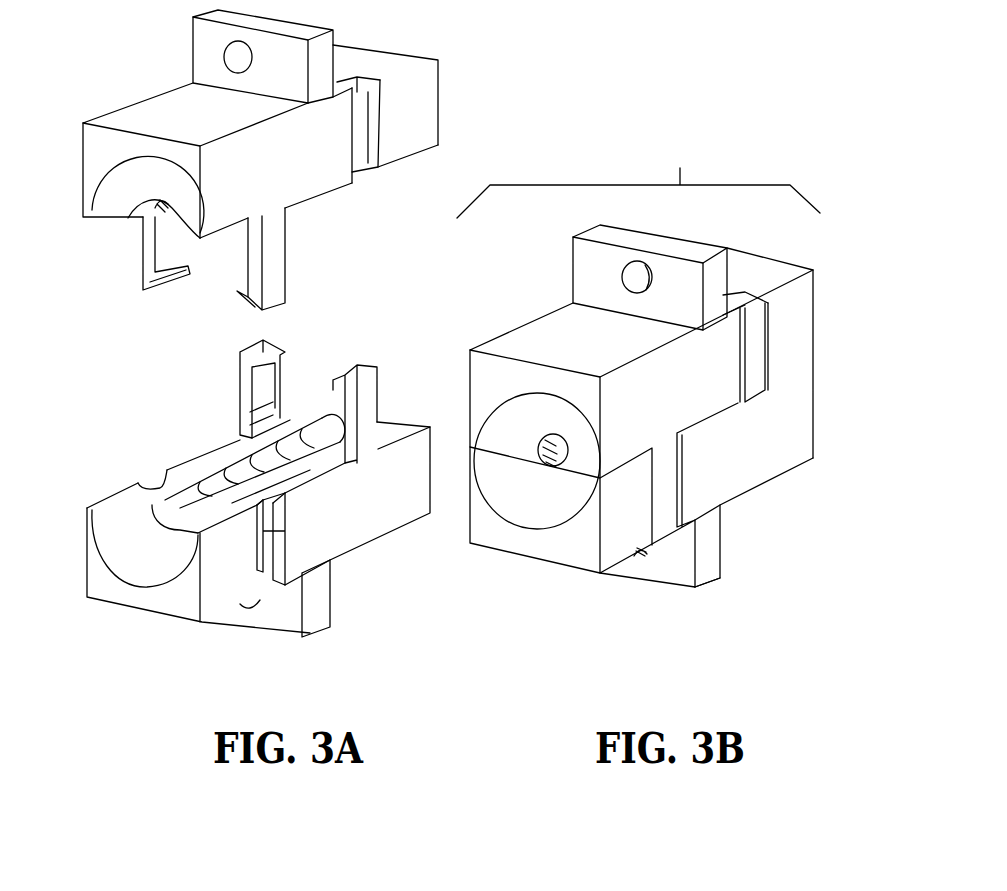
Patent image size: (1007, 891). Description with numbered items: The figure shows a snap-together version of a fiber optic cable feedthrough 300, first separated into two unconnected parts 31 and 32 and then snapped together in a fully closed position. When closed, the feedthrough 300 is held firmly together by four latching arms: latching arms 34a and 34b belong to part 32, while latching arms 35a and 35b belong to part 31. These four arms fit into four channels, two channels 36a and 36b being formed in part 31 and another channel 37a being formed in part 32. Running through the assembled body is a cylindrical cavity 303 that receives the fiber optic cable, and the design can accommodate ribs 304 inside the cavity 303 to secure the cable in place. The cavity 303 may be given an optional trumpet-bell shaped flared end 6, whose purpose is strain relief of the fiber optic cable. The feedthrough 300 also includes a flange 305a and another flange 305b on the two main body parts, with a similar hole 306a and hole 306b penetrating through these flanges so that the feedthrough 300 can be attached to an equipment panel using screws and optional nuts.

In FIG. 3B, the fiber optic cable feedthrough 300 is at (638, 179).
In FIG. 3A, the part 31 is at (167, 610).
In FIG. 3B, the part 31 is at (527, 563).
In FIG. 3A, the part 32 is at (125, 108).
In FIG. 3B, the part 32 is at (505, 332).
In FIG. 3B, the trumpet-bell shaped flared end 6 is at (527, 503).
In FIG. 3B, the cylindrical cavity 303 is at (548, 448).
In FIG. 3A, the ribs 304 is at (150, 208).
In FIG. 3A, the flange 305a is at (333, 607).
In FIG. 3B, the flange 305a is at (722, 548).
In FIG. 3A, the flange 305b is at (193, 58).
In FIG. 3B, the flange 305b is at (575, 250).
In FIG. 3B, the hole 306a is at (640, 557).
In FIG. 3B, the hole 306b is at (633, 284).
In FIG. 3A, the latching arm 34a is at (142, 247).
In FIG. 3A, the latching arm 34b is at (287, 253).
In FIG. 3A, the latching arm 35a is at (240, 388).
In FIG. 3A, the latching arm 35b is at (382, 398).
In FIG. 3A, the channel 36a is at (170, 477).
In FIG. 3A, the channel 36b is at (330, 570).
In FIG. 3A, the channel 37a is at (362, 146).